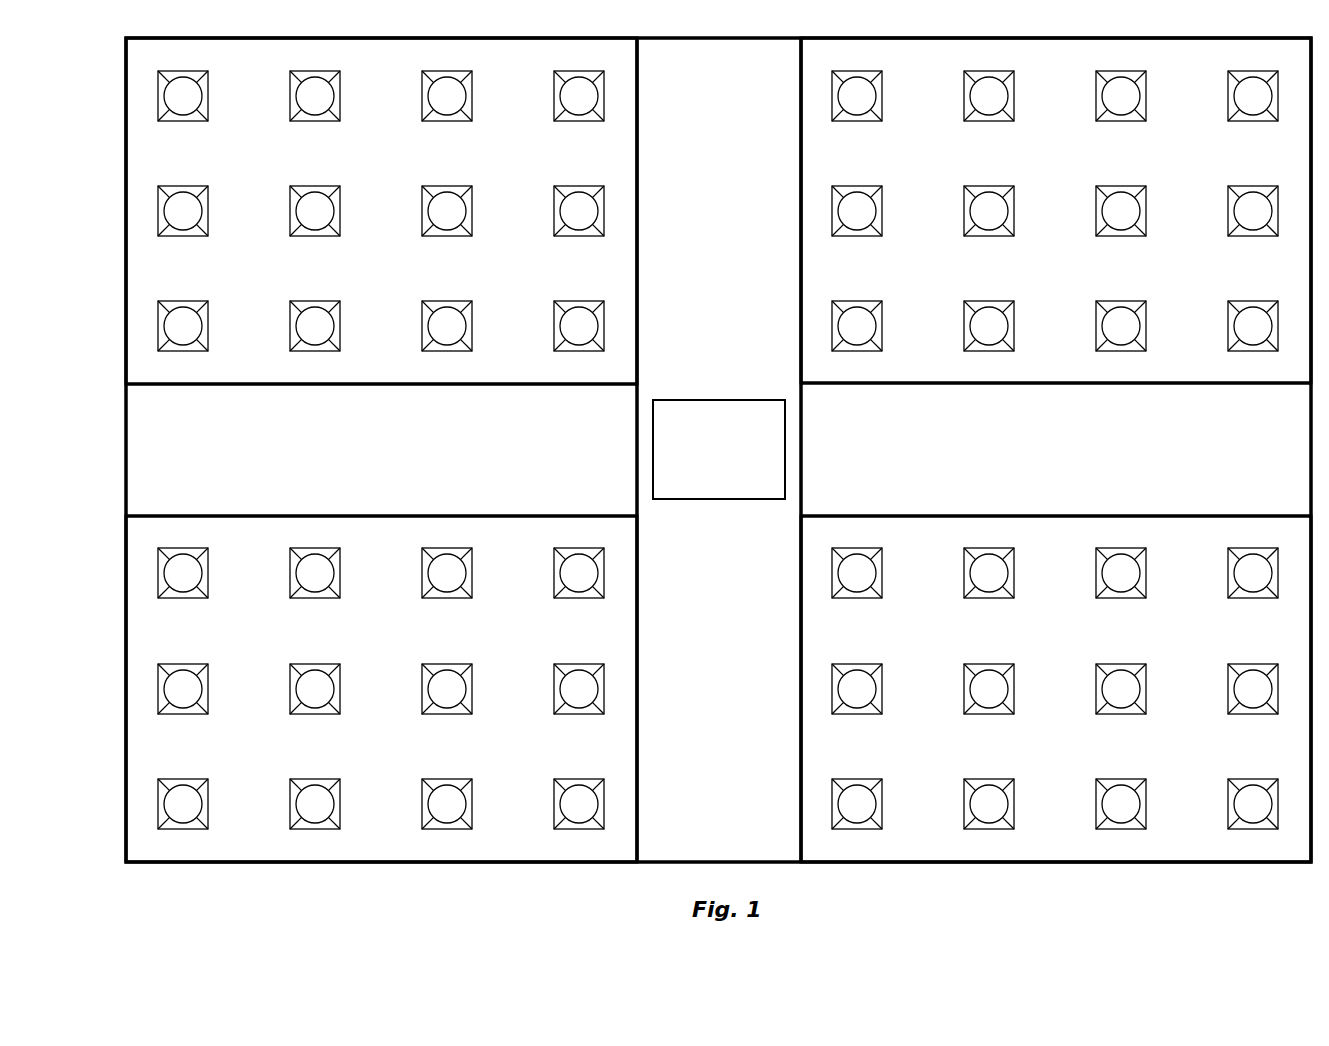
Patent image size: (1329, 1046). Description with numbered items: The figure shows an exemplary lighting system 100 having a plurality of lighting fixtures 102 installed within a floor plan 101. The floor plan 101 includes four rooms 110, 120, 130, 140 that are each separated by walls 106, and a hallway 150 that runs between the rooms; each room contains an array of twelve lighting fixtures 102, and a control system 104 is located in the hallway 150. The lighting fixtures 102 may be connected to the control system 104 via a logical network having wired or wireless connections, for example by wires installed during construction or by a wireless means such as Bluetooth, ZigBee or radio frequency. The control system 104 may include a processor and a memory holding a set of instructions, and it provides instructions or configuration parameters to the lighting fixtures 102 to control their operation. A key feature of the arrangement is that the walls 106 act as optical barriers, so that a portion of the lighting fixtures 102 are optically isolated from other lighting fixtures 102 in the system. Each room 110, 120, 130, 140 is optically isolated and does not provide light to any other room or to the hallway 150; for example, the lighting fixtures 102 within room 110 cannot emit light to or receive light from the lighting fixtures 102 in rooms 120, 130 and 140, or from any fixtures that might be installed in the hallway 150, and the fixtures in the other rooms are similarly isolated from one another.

The lighting system 100 is at (737, 22).
The floor plan 101 is at (790, 862).
The lighting fixture 102 is at (738, 465).
The control system 104 is at (719, 449).
The wall 106 is at (637, 173).
The room 110 is at (405, 367).
The room 120 is at (1063, 361).
The room 130 is at (397, 838).
The room 140 is at (1063, 832).
The hallway 150 is at (961, 450).